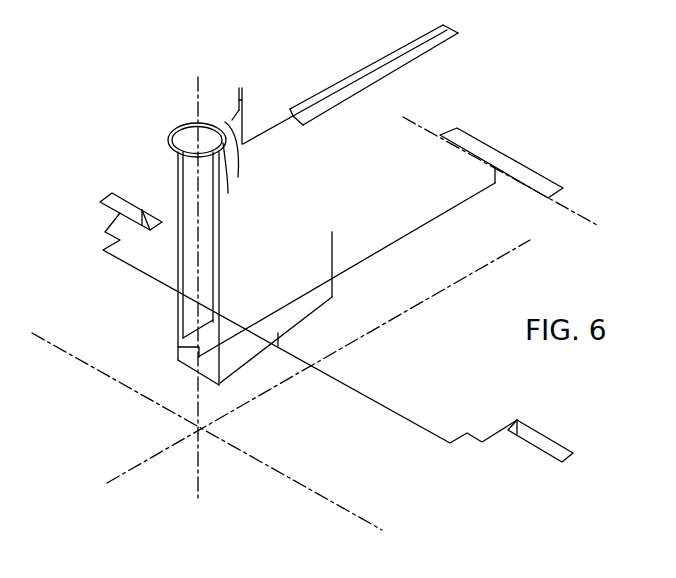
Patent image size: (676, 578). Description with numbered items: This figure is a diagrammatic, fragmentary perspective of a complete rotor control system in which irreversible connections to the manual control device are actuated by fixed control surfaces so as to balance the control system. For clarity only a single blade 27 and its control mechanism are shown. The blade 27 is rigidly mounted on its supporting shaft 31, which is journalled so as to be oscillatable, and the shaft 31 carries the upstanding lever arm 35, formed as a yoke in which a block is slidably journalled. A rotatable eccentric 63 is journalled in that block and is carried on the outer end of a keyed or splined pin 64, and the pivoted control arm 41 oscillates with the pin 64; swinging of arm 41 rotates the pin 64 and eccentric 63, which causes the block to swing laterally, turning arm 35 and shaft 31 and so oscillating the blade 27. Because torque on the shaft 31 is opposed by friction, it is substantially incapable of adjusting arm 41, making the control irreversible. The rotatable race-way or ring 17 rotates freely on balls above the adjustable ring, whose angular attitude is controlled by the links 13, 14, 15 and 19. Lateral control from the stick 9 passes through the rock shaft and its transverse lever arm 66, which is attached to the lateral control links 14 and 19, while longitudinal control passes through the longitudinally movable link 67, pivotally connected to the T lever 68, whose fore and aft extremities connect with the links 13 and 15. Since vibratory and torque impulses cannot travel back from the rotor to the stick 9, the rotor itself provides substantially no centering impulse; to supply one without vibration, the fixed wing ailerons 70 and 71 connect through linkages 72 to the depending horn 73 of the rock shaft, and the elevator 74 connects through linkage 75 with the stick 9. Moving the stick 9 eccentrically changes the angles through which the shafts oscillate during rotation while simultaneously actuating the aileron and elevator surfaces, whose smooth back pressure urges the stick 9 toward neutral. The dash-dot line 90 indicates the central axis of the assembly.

The stick 9 is at (342, 230).
The link 13 is at (184, 270).
The link 14 is at (178, 335).
The link 15 is at (213, 268).
The rotatable race-way or ring 17 is at (170, 136).
The link 19 is at (219, 386).
The blade 27 is at (412, 57).
The supporting shaft 31 is at (255, 143).
The lever arm 35 is at (245, 113).
The pivoted control arm 41 is at (228, 193).
The rotatable eccentric 63 is at (238, 93).
The pin 64 is at (238, 177).
The transverse lever arm 66 is at (187, 368).
The longitudinally movable link 67 is at (302, 293).
The T lever 68 is at (178, 348).
The fixed wing aileron 70 is at (102, 202).
The fixed wing aileron 71 is at (535, 437).
The linkage 72 is at (127, 265).
The depending horn 73 is at (279, 338).
The elevator 74 is at (547, 180).
The linkage 75 is at (443, 217).
The center axis 90 is at (194, 84).